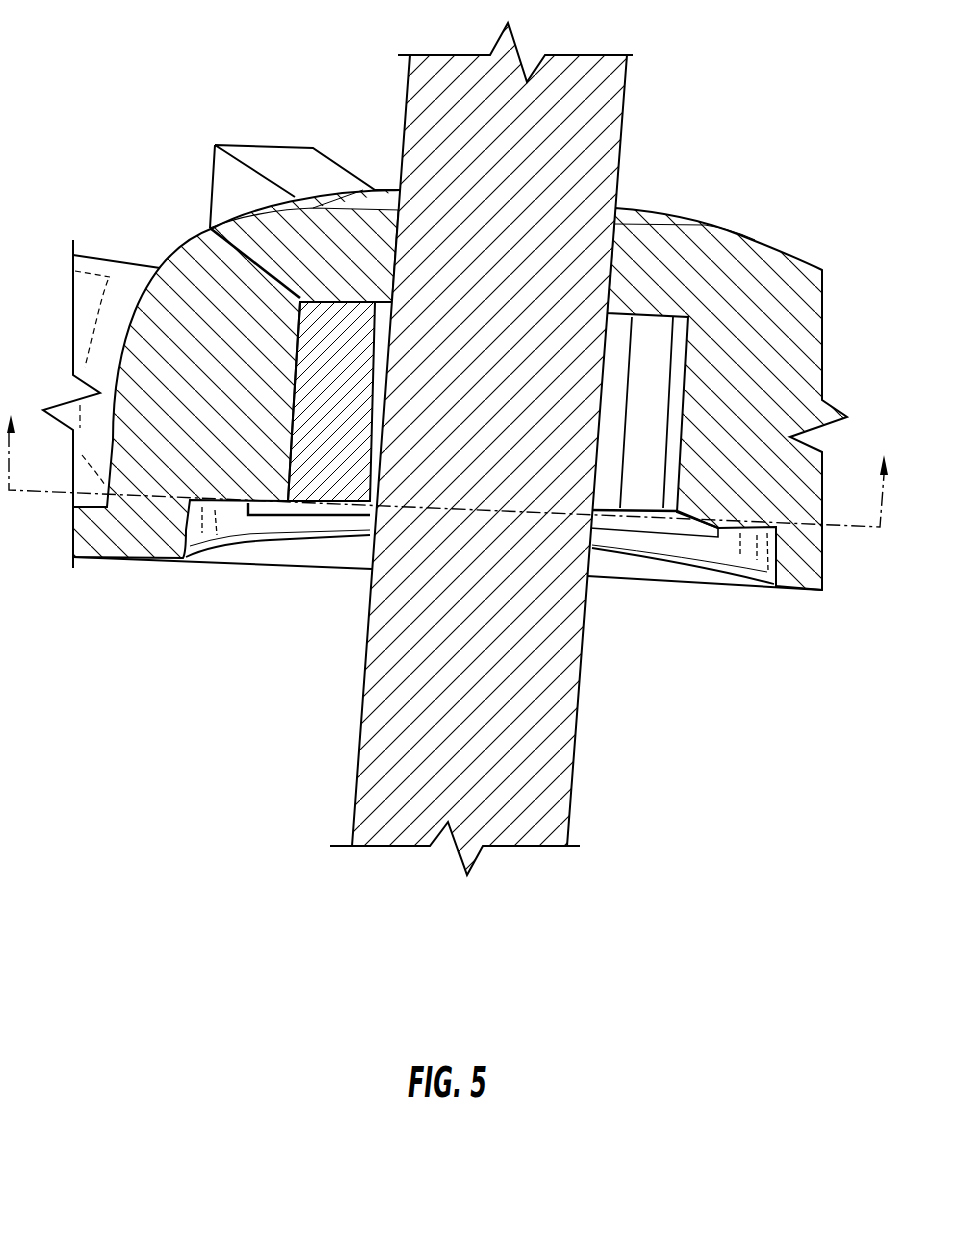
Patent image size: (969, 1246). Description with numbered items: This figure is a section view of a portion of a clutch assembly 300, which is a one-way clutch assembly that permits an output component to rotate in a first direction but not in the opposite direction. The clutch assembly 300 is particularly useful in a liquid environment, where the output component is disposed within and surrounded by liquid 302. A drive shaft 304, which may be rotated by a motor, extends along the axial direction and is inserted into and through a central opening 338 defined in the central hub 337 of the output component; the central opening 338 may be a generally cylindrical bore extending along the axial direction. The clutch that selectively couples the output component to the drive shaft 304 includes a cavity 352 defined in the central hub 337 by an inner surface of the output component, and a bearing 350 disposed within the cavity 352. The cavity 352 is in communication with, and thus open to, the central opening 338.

The clutch assembly 300 is at (780, 98).
The liquid 302 is at (372, 505).
The drive shaft 304 is at (533, 189).
The central hub 337 is at (760, 272).
The central opening 338 is at (400, 190).
The bearing 350 is at (213, 230).
The cavity 352 is at (653, 327).